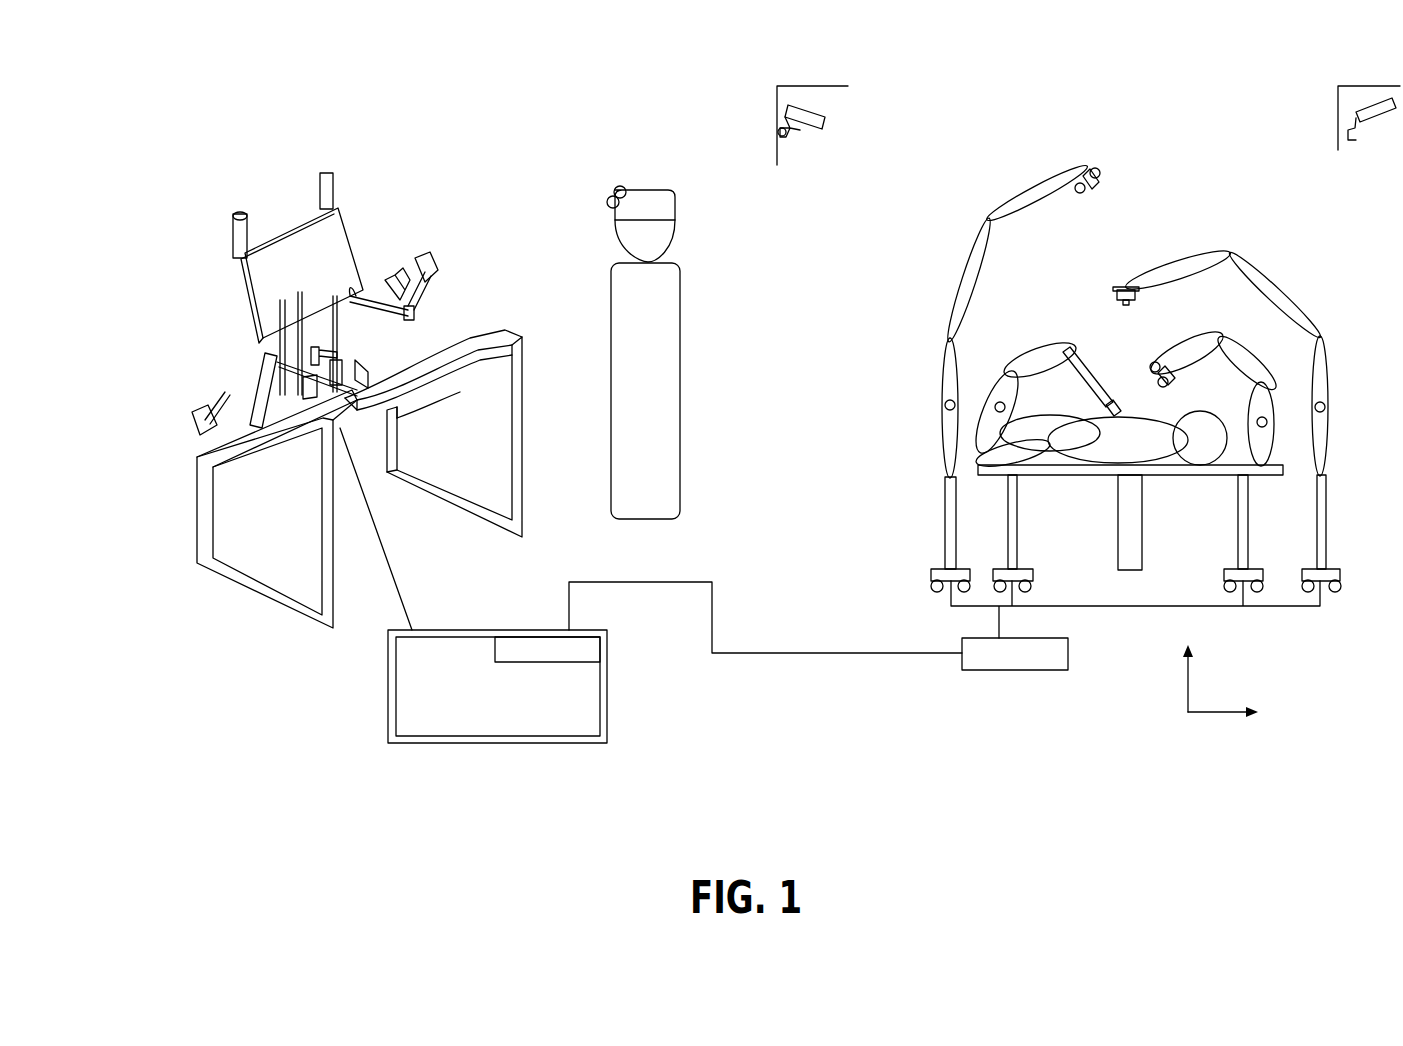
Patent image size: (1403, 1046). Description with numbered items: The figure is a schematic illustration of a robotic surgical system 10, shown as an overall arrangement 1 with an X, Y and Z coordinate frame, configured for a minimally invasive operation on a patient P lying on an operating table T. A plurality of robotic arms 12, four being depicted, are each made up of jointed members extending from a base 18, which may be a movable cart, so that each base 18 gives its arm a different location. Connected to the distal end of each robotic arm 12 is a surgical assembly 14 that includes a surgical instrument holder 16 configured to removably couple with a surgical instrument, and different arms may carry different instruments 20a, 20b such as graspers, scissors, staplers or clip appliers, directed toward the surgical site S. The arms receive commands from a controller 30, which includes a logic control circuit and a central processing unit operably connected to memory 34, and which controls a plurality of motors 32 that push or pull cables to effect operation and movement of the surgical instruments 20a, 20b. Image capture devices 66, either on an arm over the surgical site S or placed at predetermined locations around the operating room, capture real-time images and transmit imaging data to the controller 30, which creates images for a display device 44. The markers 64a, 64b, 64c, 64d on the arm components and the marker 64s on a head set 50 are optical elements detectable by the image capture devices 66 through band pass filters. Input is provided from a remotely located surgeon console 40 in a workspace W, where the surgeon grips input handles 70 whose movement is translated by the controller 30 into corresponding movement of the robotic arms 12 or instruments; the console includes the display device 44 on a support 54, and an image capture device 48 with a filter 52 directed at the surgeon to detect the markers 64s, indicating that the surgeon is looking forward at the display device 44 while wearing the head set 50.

The robotic surgical system 1 is at (131, 141).
The robotic surgical system 10 is at (1070, 284).
The robotic arm 12 is at (986, 190).
The surgical assembly 14 is at (1090, 408).
The surgical instrument holder 16 is at (1117, 398).
The base 18 is at (938, 568).
The surgical instrument 20a is at (1110, 420).
The surgical instrument 20b is at (1150, 378).
The controller 30 is at (511, 696).
The motor 32 is at (1038, 670).
The memory 34 is at (571, 662).
The surgeon console 40 is at (248, 160).
The display device 44 is at (352, 216).
The image capture device 48 is at (235, 256).
The head set 50 is at (670, 207).
The filter 52 is at (237, 214).
The support post 54 is at (325, 172).
The marker 64a is at (998, 404).
The marker 64b is at (1153, 363).
The marker 64c is at (944, 407).
The marker 64d is at (1324, 407).
The marker 64s is at (627, 192).
The image capture device 66 is at (826, 125).
The input handle 70 is at (445, 263).
The workspace W is at (451, 212).
The surgical site S is at (1068, 462).
The patient P is at (1105, 445).
The operating table T is at (1195, 472).
The X axis X is at (1178, 726).
The Y axis Y is at (1231, 714).
The Z axis Z is at (1187, 668).